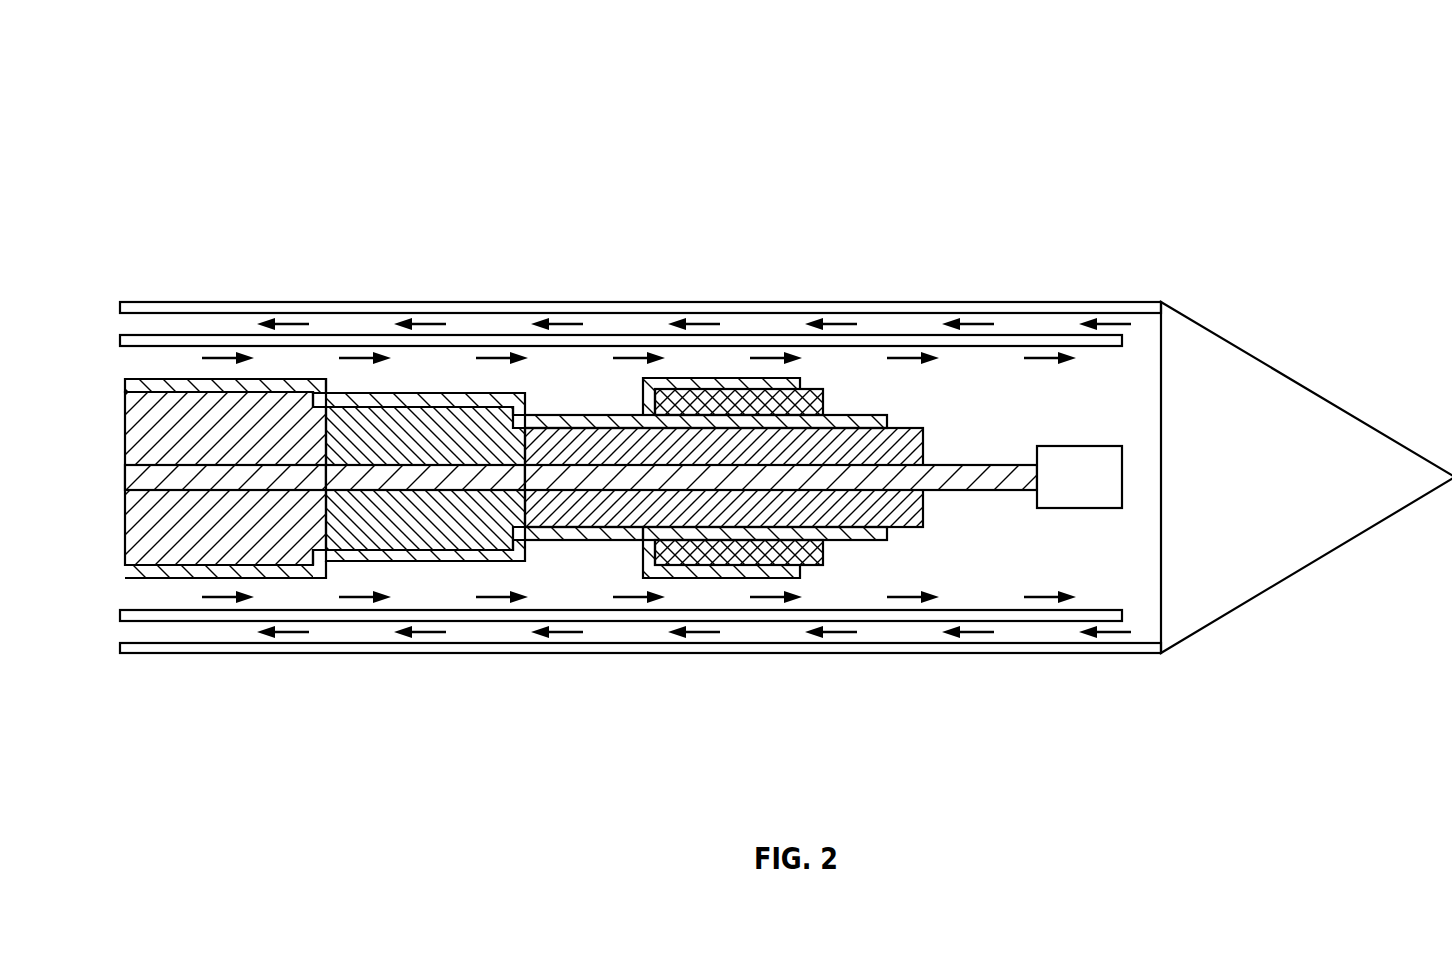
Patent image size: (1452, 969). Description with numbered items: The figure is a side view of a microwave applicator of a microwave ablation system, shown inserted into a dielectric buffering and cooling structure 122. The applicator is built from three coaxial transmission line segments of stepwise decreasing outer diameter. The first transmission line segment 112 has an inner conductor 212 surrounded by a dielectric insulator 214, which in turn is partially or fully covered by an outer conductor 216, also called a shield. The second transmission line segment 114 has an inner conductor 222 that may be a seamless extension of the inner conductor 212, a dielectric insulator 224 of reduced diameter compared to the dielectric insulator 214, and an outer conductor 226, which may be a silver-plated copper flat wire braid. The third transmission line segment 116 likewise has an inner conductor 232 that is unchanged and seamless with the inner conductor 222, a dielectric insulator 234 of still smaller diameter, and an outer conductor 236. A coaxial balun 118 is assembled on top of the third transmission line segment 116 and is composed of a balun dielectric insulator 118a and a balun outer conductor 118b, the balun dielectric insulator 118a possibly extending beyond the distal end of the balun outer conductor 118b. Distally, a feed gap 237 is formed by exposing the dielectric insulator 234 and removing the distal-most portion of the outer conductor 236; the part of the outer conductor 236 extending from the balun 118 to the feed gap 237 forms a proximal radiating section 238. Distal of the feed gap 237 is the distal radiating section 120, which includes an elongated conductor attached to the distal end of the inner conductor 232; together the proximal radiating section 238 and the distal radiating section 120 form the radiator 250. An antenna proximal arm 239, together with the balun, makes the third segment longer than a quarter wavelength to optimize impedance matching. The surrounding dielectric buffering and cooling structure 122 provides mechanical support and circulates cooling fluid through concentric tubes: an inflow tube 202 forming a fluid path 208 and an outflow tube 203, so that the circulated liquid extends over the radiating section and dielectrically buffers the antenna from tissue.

The first transmission line segment 112 is at (325, 297).
The second transmission line segment 114 is at (525, 297).
The third transmission line segment 116 is at (925, 297).
The coaxial balun 118 is at (773, 577).
The balun dielectric insulator 118a is at (815, 550).
The balun outer conductor 118b is at (727, 567).
The distal radiating section 120 is at (1121, 297).
The dielectric buffering and cooling structure 122 is at (1160, 296).
The inflow tube 202 is at (572, 617).
The outflow tube 203 is at (620, 648).
The fluid path 208 is at (463, 598).
The inner conductor 212 is at (204, 478).
The dielectric insulator 214 is at (246, 525).
The outer conductor 216 is at (268, 572).
The inner conductor 222 is at (362, 480).
The dielectric insulator 224 is at (373, 528).
The outer conductor 226 is at (417, 555).
The inner conductor 232 is at (913, 482).
The dielectric insulator 234 is at (863, 508).
The outer conductor 236 is at (625, 540).
The feed gap 237 is at (902, 552).
The proximal radiating section 238 is at (925, 297).
The antenna proximal arm 239 is at (560, 535).
The radiator 250 is at (1121, 297).